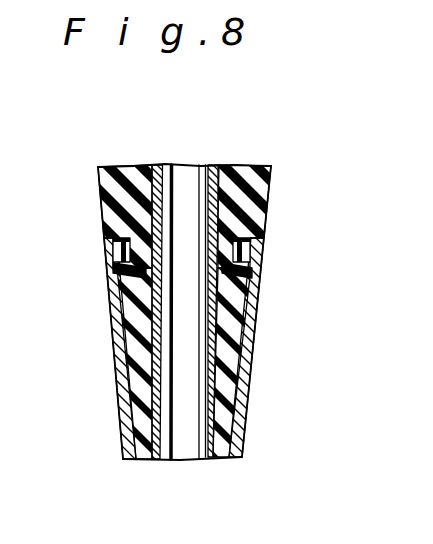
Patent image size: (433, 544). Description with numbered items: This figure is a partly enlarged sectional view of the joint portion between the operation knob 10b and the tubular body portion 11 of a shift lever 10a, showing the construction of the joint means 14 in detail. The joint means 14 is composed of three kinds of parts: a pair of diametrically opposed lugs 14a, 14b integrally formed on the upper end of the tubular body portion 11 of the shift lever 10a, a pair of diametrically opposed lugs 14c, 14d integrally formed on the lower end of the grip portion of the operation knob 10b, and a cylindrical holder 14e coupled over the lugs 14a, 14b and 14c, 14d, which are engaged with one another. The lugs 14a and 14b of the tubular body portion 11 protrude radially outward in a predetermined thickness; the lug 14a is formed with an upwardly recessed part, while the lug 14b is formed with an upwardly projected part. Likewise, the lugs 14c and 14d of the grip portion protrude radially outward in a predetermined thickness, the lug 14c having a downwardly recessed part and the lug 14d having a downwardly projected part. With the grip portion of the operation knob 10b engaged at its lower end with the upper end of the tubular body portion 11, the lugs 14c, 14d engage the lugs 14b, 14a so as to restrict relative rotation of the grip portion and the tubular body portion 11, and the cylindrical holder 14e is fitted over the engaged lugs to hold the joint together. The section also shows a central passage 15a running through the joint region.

The shift lever 10a is at (130, 462).
The operation knob 10b is at (278, 168).
The tubular body portion 11 is at (247, 427).
The joint means 14 is at (113, 358).
The lug 14a is at (226, 326).
The lug 14b is at (113, 310).
The lug 14c is at (112, 261).
The lug 14d is at (240, 297).
The cylindrical holder 14e is at (255, 253).
The bore 15a is at (183, 176).